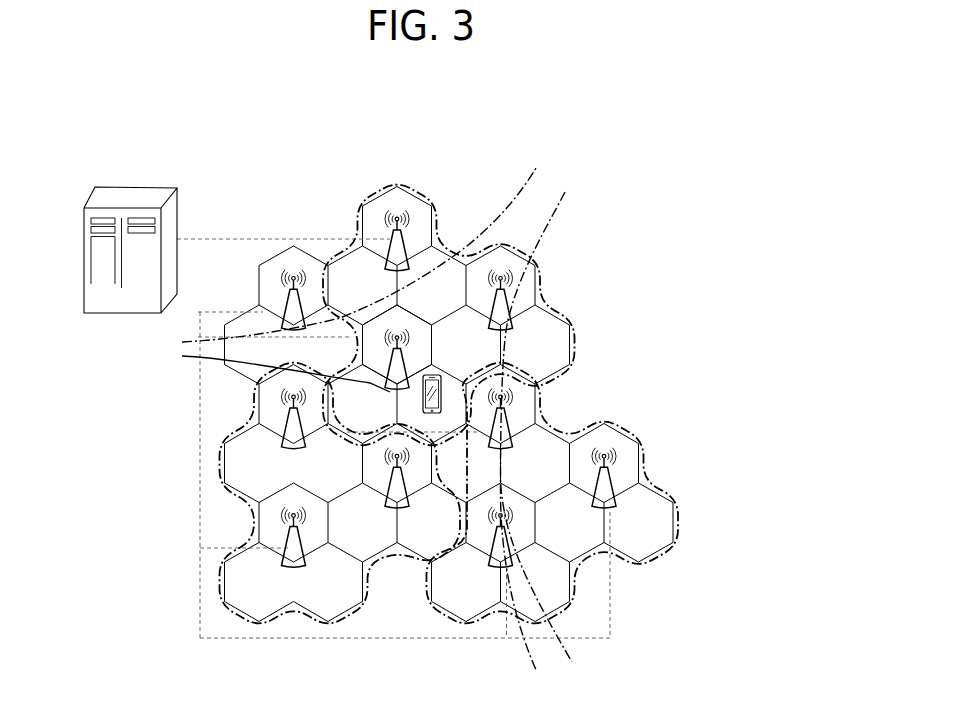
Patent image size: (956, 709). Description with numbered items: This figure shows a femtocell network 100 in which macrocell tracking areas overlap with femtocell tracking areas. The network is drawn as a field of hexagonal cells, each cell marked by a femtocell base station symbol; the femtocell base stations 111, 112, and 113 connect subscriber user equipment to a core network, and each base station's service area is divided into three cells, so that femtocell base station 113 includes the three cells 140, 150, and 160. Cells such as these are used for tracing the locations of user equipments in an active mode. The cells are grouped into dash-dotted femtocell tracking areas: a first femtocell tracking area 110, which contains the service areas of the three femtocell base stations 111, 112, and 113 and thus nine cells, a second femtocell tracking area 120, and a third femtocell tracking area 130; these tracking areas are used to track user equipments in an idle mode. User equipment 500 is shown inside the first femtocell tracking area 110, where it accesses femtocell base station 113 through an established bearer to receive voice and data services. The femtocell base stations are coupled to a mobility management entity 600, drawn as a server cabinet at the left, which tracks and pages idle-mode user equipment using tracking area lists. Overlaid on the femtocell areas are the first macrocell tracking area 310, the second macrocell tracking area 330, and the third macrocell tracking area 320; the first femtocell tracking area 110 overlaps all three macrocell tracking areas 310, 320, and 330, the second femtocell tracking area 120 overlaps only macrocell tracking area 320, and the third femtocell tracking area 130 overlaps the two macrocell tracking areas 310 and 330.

The femtocell network 100 is at (561, 120).
The first femtocell tracking area 110 is at (425, 189).
The femtocell base station 111 is at (433, 232).
The femtocell base station 112 is at (520, 293).
The femtocell base station 113 is at (420, 327).
The second femtocell tracking area 120 is at (218, 438).
The third femtocell tracking area 130 is at (647, 460).
The cell 140 is at (382, 318).
The cell 150 is at (338, 372).
The cell 160 is at (450, 438).
The first macrocell tracking area 310 is at (350, 149).
The third macrocell tracking area 320 is at (412, 660).
The second macrocell tracking area 330 is at (708, 366).
The user equipment 500 is at (442, 374).
The mobility management entity 600 is at (141, 187).